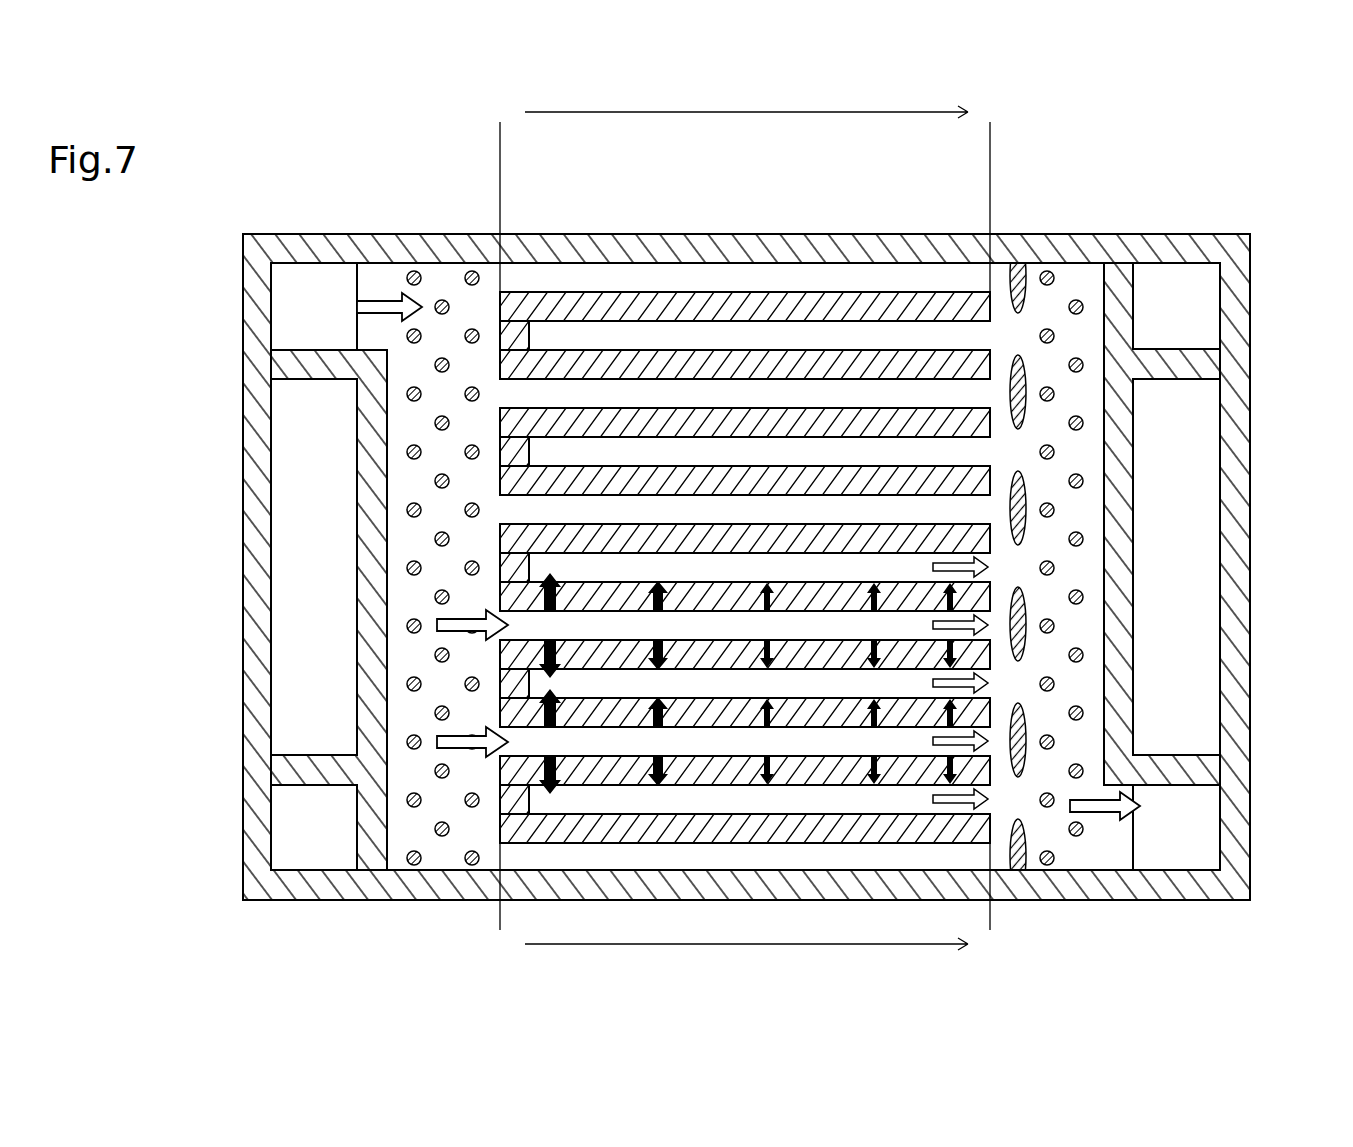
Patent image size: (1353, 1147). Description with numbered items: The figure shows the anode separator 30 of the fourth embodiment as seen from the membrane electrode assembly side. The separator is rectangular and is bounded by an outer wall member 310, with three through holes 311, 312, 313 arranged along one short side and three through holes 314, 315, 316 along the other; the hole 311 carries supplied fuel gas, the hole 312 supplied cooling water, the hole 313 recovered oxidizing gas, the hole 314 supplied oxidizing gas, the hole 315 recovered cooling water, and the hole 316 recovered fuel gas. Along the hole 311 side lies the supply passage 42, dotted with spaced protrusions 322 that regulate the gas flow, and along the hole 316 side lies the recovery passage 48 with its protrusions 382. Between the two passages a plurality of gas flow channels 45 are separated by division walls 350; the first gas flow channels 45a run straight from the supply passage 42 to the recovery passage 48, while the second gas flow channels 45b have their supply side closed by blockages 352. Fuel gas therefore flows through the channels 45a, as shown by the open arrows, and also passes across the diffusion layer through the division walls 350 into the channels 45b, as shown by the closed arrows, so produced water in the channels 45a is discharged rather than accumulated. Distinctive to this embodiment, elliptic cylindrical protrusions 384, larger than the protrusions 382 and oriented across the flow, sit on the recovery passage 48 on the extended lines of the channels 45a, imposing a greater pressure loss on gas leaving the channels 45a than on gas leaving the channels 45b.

The anode separator 30 is at (1311, 192).
The outer wall member 310 is at (1117, 247).
The hole 311 is at (293, 287).
The hole 312 is at (290, 537).
The hole 313 is at (293, 807).
The hole 314 is at (1198, 283).
The hole 315 is at (1200, 537).
The hole 316 is at (1200, 807).
The protrusions 322 is at (414, 270).
The supply passage 42 is at (457, 262).
The gas flow channels 45 is at (750, 489).
The gas flow channels (first gas flow channels) 45a is at (750, 460).
The gas flow channels (second gas flow channels) 45b is at (750, 489).
The recovery passage 48 is at (1083, 275).
The division walls 350 is at (750, 489).
The blockages 352 is at (750, 495).
The protrusions 382 is at (1047, 271).
The protrusions 384 is at (1028, 527).